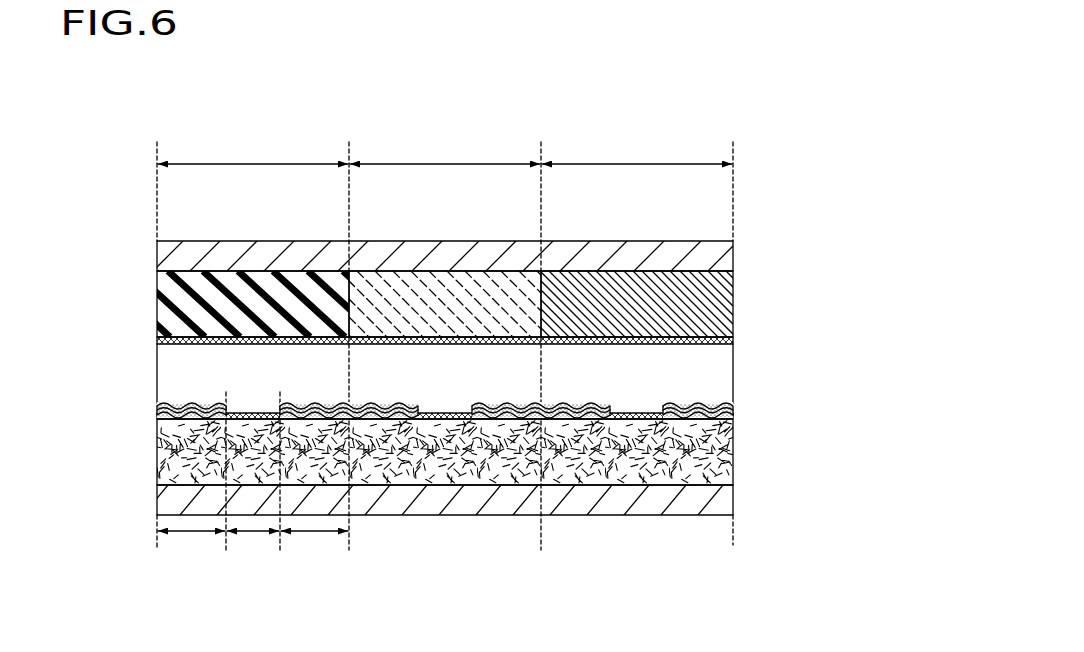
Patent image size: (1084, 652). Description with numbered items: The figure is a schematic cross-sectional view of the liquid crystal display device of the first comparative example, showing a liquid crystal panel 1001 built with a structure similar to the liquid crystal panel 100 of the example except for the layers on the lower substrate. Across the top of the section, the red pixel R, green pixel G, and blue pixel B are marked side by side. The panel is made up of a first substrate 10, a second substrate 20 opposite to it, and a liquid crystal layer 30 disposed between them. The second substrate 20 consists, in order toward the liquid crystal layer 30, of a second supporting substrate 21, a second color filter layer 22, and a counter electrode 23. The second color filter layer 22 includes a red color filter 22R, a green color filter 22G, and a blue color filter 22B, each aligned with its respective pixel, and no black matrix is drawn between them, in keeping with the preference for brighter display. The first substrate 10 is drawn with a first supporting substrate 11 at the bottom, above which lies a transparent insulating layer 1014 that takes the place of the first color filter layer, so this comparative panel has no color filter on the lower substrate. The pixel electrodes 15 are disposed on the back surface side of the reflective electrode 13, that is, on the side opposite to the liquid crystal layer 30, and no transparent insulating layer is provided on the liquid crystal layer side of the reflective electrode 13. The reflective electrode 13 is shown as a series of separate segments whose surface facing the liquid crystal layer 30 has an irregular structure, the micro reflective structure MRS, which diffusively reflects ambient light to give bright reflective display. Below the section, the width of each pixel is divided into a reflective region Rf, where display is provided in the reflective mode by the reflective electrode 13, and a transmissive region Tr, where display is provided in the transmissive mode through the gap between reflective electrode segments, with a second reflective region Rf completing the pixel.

The liquid crystal panel 1001 is at (826, 105).
The liquid crystal panel 100 is at (886, 295).
The second substrate 20 is at (841, 247).
The second supporting substrate 21 is at (728, 252).
The second color filter layer 22 is at (740, 272).
The red color filter 22R is at (166, 311).
The green color filter 22G is at (447, 288).
The blue color filter 22B is at (640, 288).
The counter electrode 23 is at (728, 340).
The liquid crystal layer 30 is at (155, 345).
The first substrate 10 is at (841, 373).
The reflective electrode 13 is at (728, 401).
The pixel electrode 15 is at (728, 414).
The transparent insulating layer 1014 is at (728, 451).
The first supporting substrate 11 is at (728, 495).
The micro reflective structure MRS is at (162, 416).
The red pixel R is at (254, 140).
The green pixel G is at (446, 140).
The blue pixel B is at (639, 140).
The reflective region Rf is at (255, 560).
The transmissive region Tr is at (252, 560).